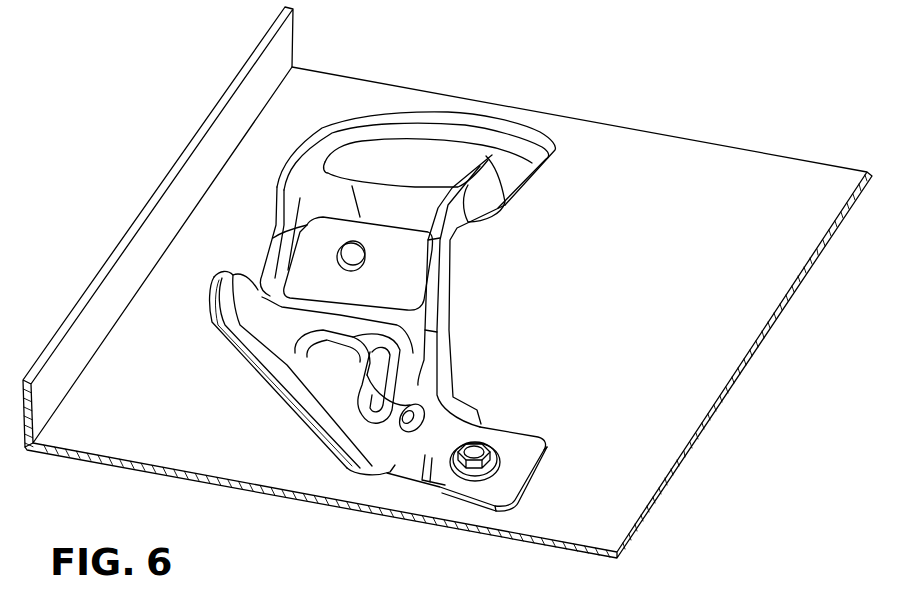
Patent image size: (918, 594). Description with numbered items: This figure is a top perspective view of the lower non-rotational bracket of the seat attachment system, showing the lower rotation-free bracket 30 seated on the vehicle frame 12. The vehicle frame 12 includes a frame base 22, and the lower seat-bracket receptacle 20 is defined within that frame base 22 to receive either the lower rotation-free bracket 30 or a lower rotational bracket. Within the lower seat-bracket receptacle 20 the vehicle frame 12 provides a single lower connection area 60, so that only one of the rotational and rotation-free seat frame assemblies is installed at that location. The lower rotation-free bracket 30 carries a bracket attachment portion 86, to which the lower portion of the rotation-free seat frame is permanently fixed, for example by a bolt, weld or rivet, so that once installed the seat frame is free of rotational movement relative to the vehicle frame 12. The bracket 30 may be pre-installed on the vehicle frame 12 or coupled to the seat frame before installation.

The vehicle frame 12 is at (113, 210).
The lower seat-bracket receptacle 20 is at (230, 369).
The frame base 22 is at (283, 458).
The lower rotation-free bracket 30 is at (488, 196).
The lower connection area 60 is at (543, 475).
The bracket attachment portion 86 is at (372, 253).